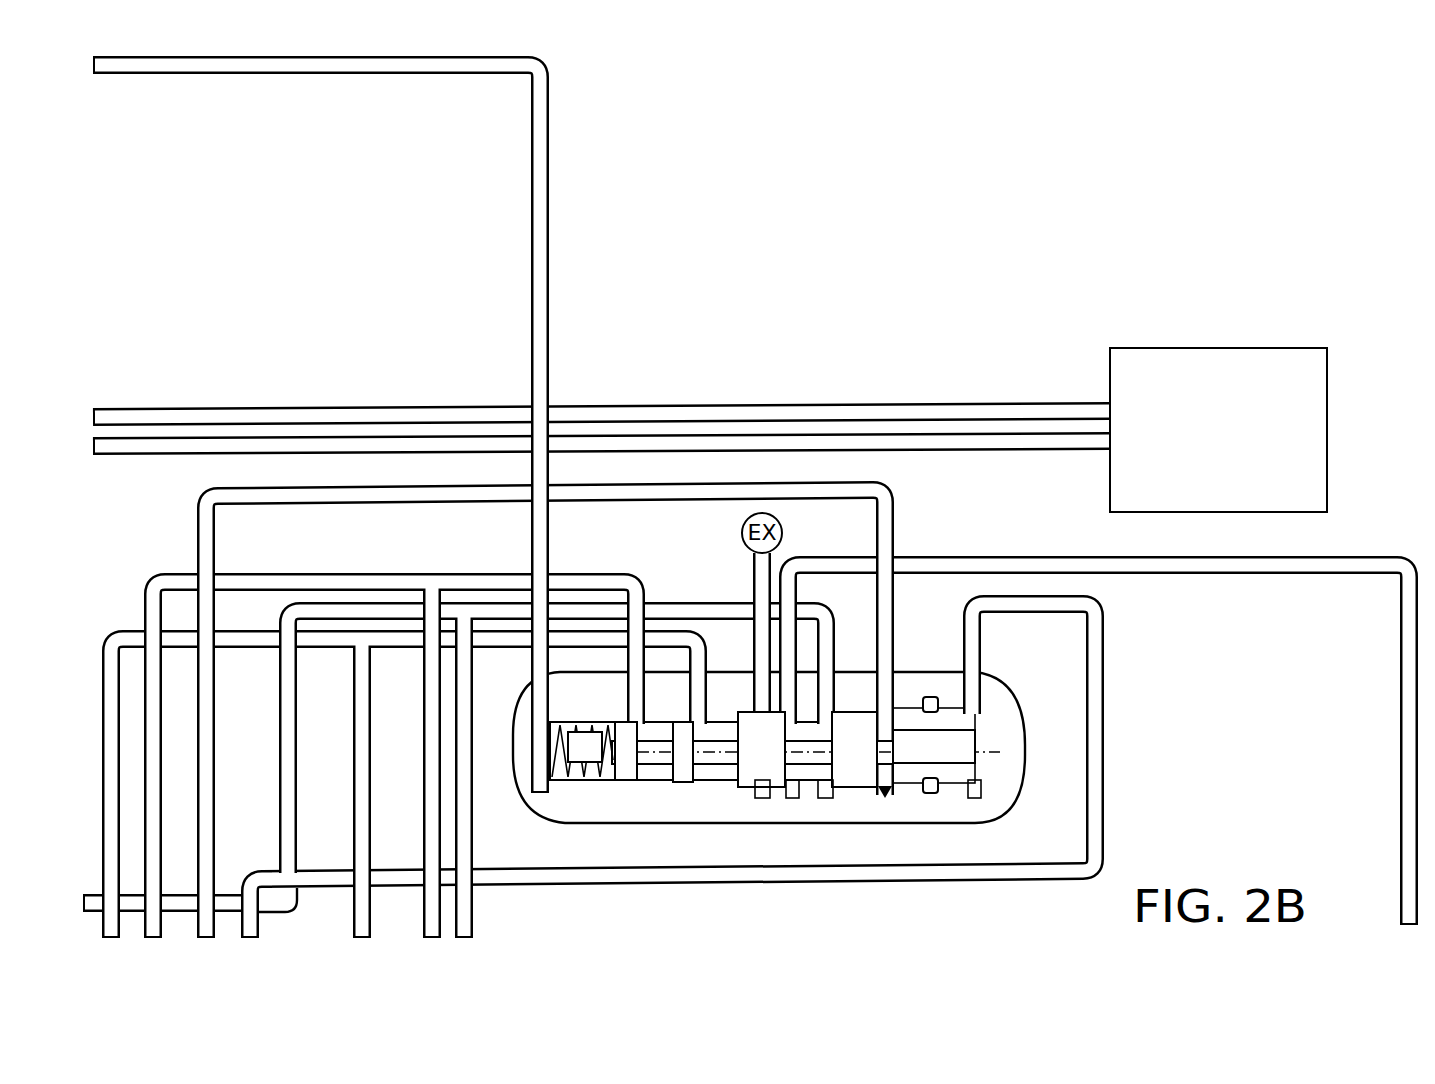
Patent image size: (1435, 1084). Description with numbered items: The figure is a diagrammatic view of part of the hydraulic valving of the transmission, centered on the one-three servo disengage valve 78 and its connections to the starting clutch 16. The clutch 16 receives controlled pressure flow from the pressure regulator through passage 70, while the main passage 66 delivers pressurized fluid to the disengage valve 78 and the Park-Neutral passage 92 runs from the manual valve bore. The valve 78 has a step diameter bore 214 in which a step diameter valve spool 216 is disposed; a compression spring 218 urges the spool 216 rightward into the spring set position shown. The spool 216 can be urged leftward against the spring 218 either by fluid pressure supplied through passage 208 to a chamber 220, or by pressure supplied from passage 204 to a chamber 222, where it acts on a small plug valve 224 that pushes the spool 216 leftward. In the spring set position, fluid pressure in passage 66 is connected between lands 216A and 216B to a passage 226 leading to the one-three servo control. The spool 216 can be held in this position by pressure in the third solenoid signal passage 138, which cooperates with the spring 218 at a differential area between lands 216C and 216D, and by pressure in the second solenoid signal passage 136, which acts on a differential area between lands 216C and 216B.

The starting clutch 16 is at (1214, 357).
The main passage 66 is at (703, 612).
The passage 70 is at (172, 449).
The 1/3 servo disengage valve 78 is at (1036, 780).
The Park-Neutral passage 92 is at (340, 70).
The second solenoid signal passage 136 is at (113, 797).
The third solenoid signal passage 138 is at (362, 580).
The passage 204 is at (980, 872).
The passage 208 is at (888, 533).
The step diameter bore 214 is at (818, 772).
The step diameter valve spool 216 is at (913, 790).
The land 216A is at (872, 772).
The land 216B is at (764, 762).
The land 216C is at (682, 772).
The land 216D is at (620, 767).
The compression spring 218 is at (566, 765).
The chamber 220 is at (882, 705).
The chamber 222 is at (966, 703).
The small plug valve 224 is at (985, 735).
The passage 226 is at (1303, 562).